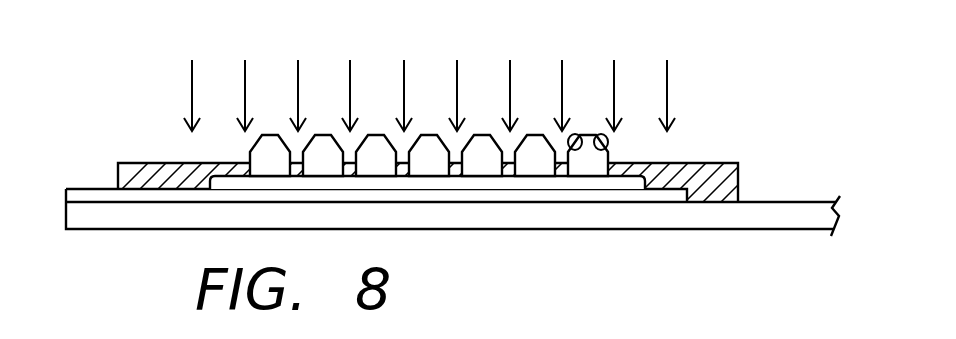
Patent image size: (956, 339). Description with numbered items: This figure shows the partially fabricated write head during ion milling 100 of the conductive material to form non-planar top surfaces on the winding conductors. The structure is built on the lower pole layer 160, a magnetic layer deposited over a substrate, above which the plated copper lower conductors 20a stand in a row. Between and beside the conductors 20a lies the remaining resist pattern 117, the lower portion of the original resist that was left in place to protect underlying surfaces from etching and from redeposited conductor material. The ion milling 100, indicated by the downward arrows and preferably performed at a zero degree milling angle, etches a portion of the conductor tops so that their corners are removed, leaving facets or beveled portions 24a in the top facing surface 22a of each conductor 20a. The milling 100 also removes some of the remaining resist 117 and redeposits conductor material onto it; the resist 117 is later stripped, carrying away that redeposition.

The ion milling 100 is at (189, 93).
The remaining resist pattern 117 is at (716, 177).
The lower pole layer 160 is at (801, 214).
The lower conductors 20a is at (483, 156).
The top facing surface 22a is at (586, 128).
The beveled portions 24a is at (599, 140).